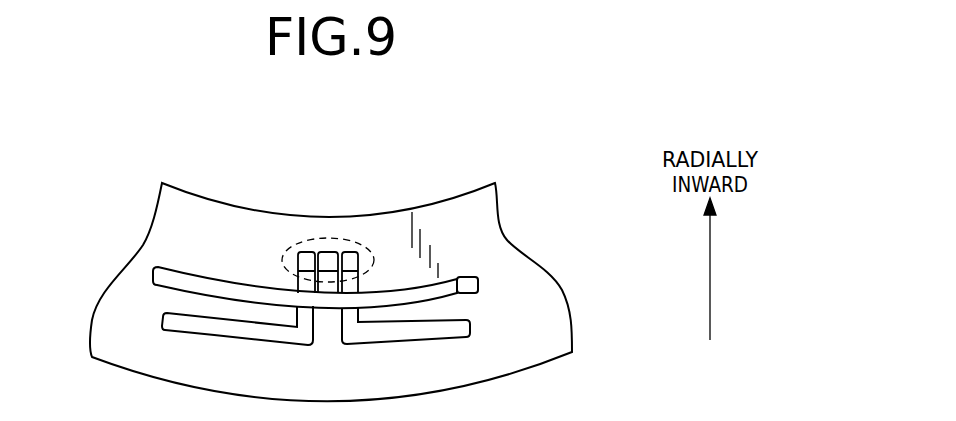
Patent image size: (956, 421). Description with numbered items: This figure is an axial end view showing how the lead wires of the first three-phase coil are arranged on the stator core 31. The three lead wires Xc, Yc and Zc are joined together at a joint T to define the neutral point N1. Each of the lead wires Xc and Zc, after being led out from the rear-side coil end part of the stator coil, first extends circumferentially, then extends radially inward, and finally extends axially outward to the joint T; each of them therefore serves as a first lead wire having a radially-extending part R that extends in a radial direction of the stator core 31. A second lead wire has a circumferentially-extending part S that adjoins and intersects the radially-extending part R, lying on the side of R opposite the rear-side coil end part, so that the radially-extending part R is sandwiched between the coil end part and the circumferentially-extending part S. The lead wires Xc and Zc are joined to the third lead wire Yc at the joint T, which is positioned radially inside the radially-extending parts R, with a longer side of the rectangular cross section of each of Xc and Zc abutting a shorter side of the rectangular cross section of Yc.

The stator core 31 is at (563, 322).
The circumferentially-extending part S is at (197, 283).
The radially-extending part R is at (350, 317).
The joint T is at (316, 260).
The lead wire Zc is at (310, 252).
The lead wire Yc is at (325, 253).
The lead wire Xc is at (348, 252).
The neutral point N1 is at (375, 233).